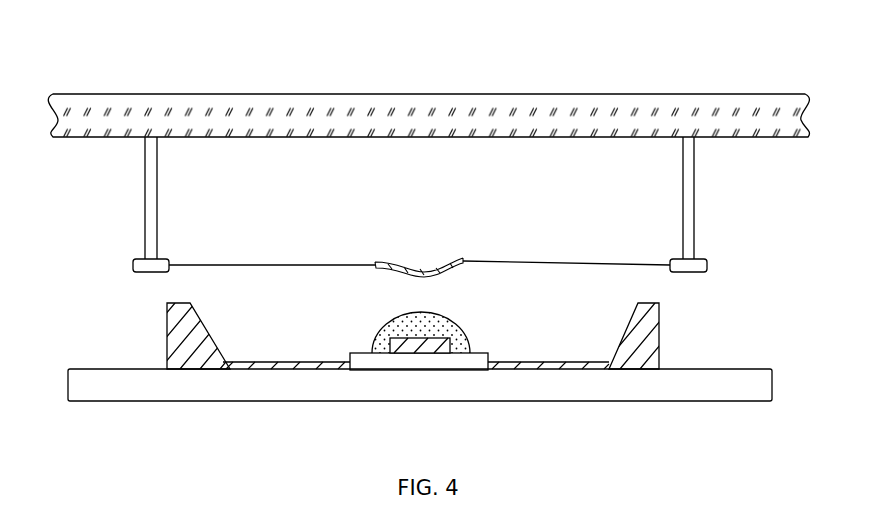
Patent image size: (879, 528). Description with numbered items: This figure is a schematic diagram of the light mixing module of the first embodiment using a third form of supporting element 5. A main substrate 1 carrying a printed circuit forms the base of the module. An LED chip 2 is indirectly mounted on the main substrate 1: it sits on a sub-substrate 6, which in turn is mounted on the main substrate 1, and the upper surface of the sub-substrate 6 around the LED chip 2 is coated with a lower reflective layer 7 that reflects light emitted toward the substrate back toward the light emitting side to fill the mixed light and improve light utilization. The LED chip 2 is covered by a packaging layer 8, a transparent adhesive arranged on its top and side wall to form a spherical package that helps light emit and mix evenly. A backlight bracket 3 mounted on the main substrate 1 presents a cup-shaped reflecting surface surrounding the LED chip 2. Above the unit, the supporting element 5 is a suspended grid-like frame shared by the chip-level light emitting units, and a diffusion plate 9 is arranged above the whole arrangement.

The main substrate 1 is at (180, 392).
The LED chip 2 is at (428, 353).
The backlight bracket 3 is at (622, 362).
The supporting element 5 is at (155, 260).
The sub-substrate 6 is at (400, 363).
The lower reflective layer 7 is at (475, 353).
The packaging layer 8 is at (382, 350).
The diffusion plate 9 is at (128, 112).